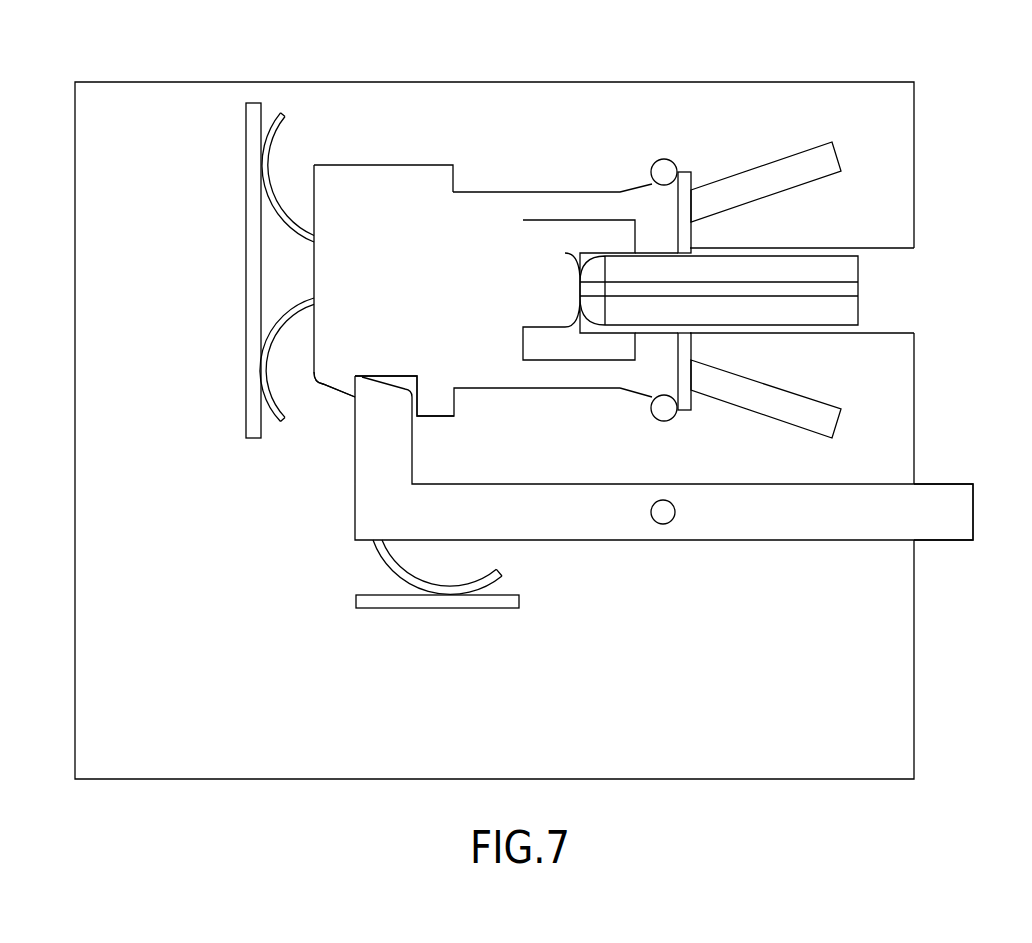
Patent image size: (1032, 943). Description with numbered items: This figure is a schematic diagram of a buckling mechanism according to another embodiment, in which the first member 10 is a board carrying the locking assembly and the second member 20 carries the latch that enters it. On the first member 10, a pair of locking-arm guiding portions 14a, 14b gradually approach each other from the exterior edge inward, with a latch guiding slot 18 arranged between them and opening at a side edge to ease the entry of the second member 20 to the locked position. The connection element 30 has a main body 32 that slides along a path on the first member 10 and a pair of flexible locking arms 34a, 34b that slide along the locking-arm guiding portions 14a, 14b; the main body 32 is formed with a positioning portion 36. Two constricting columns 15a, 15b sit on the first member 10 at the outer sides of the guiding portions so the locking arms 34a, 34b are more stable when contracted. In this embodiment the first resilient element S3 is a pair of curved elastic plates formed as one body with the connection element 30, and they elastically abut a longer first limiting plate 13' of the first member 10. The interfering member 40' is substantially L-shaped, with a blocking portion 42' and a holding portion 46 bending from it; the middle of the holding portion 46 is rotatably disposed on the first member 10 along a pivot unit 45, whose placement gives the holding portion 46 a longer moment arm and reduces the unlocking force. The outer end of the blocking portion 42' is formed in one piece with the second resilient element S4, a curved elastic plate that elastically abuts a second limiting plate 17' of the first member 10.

The first member 10 is at (930, 631).
The first limiting plate 13' is at (220, 270).
The locking-arm guiding portion 14a is at (768, 180).
The locking-arm guiding portion 14b is at (770, 400).
The constricting column 15a is at (664, 164).
The constricting column 15b is at (665, 418).
The second limiting plate 17' is at (437, 634).
The latch guiding slot 18 is at (893, 293).
The second member 20 is at (824, 256).
The connection element 30 is at (508, 183).
The main body 32 is at (384, 178).
The locking arm 34a is at (606, 207).
The locking arm 34b is at (606, 375).
The positioning portion 36 is at (345, 380).
The interfering member 40' is at (664, 506).
The blocking portion 42' is at (404, 364).
The pivot unit 45 is at (663, 518).
The holding portion 46 is at (943, 503).
The first resilient element S3 is at (276, 100).
The second resilient element S4 is at (361, 562).